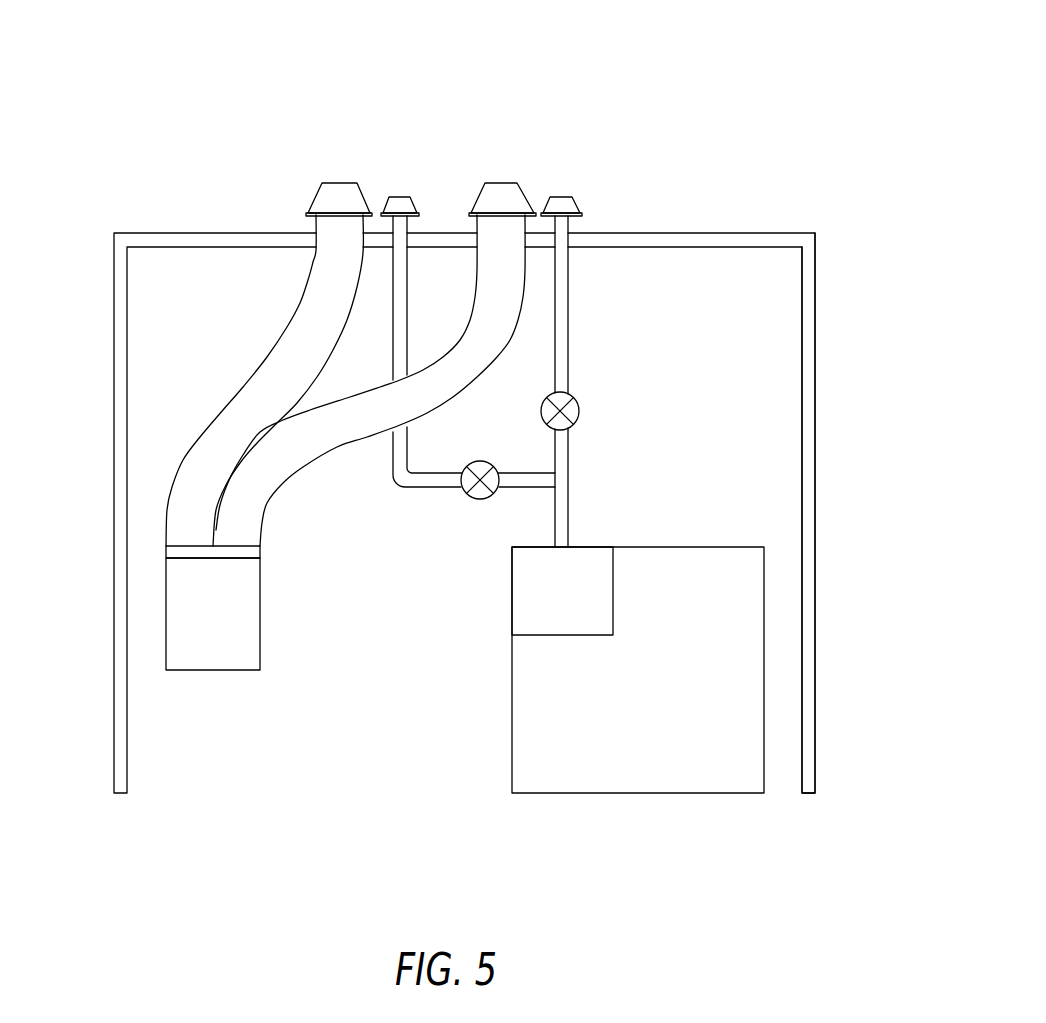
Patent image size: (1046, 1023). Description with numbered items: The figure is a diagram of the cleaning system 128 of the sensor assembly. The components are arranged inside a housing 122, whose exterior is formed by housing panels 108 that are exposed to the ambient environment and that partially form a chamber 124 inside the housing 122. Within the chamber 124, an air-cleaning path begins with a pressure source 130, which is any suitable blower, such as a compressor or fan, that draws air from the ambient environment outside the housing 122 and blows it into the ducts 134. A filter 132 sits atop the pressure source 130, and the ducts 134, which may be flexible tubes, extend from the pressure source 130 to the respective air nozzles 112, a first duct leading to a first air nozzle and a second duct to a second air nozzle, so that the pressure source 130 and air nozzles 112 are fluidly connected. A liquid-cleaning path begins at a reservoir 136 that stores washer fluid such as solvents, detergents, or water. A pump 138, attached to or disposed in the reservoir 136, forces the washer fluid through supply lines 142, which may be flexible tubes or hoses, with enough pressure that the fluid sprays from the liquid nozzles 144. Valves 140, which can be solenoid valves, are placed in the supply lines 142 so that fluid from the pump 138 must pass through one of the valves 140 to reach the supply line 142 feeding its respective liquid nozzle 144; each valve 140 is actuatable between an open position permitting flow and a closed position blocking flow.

The cleaning system 128 is at (186, 85).
The housing panels 108 is at (667, 233).
The housing 122 is at (820, 390).
The chamber 124 is at (757, 322).
The air nozzles 112 is at (333, 182).
The liquid nozzles 144 is at (390, 197).
The ducts 134 is at (278, 450).
The supply lines 142 is at (407, 297).
The valves 140 is at (547, 417).
The filter 132 is at (260, 553).
The pressure source 130 is at (260, 638).
The reservoir 136 is at (512, 737).
The pump 138 is at (512, 585).